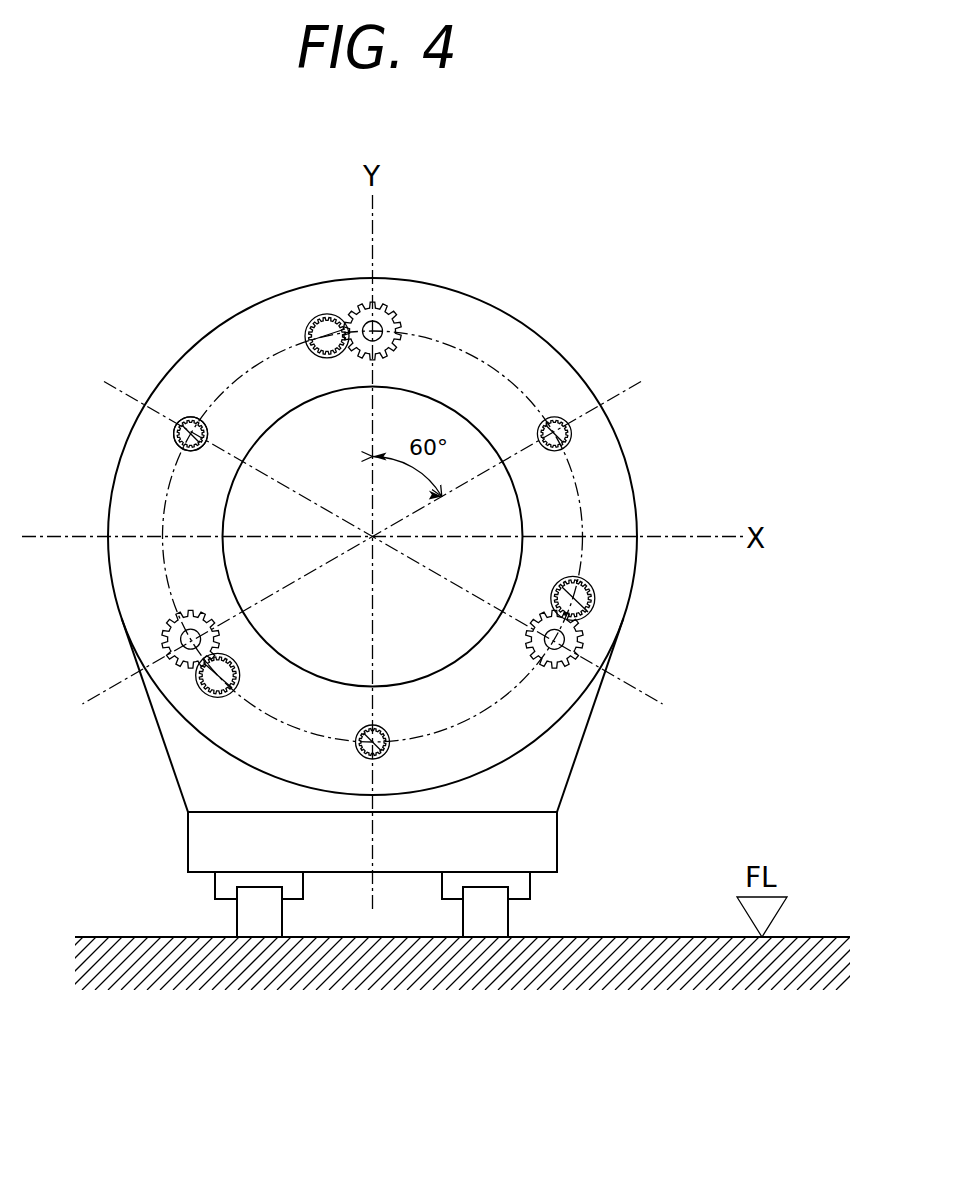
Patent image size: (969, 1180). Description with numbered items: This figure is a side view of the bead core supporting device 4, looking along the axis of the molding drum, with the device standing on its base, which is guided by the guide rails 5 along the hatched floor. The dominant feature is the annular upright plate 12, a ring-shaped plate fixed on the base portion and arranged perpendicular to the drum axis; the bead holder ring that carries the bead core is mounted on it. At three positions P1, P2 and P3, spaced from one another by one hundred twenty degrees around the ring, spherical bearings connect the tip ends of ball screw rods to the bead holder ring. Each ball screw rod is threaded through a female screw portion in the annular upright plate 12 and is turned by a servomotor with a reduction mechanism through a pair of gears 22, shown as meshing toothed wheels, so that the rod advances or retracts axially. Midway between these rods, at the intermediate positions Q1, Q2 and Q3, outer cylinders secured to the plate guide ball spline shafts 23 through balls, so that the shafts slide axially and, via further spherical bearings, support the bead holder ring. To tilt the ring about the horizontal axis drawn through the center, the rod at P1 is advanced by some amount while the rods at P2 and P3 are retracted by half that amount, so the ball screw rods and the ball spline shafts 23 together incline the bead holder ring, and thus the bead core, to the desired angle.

The bead core supporting device 4 is at (520, 275).
The guide rails 5 is at (488, 922).
The annular upright plate 12 is at (543, 712).
The pair of gears 22 is at (343, 310).
The ball spline shafts 23 is at (174, 437).
The position P1 is at (380, 323).
The position P2 is at (584, 636).
The position P3 is at (163, 633).
The position Q1 is at (555, 417).
The position Q2 is at (355, 748).
The position Q3 is at (191, 417).